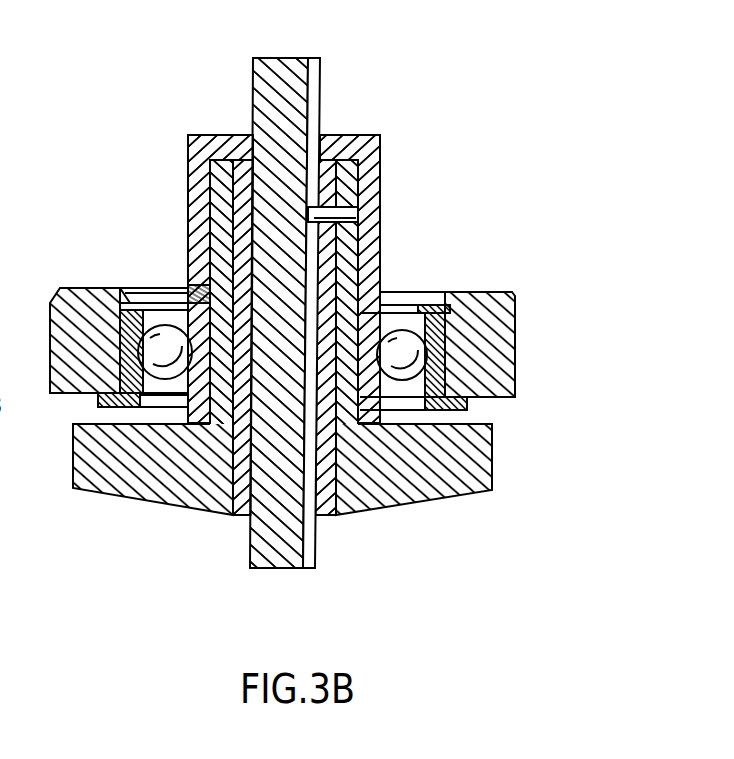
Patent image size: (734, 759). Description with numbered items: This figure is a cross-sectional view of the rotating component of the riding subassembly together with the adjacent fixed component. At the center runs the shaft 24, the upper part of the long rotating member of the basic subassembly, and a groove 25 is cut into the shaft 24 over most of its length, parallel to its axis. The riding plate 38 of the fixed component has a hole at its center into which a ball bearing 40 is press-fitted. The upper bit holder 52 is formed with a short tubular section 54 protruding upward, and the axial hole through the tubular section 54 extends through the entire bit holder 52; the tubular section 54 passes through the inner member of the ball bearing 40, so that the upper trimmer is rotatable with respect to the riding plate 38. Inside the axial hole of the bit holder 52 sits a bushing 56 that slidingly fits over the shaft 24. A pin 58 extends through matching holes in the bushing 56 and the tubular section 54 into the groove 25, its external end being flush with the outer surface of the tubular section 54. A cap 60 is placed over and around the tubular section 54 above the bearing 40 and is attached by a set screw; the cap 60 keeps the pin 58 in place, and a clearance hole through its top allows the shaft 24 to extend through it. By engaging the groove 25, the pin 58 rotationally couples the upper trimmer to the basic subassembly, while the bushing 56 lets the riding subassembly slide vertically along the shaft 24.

The shaft 24 is at (250, 543).
The groove 25 is at (313, 533).
The riding plate 38 is at (472, 298).
The ball bearing 40 is at (402, 303).
The upper bit holder 52 is at (175, 507).
The tubular section 54 is at (223, 233).
The bushing 56 is at (243, 192).
The pin 58 is at (380, 213).
The cap 60 is at (347, 140).